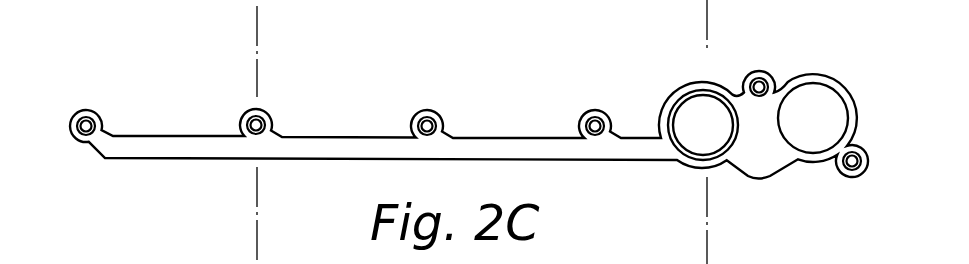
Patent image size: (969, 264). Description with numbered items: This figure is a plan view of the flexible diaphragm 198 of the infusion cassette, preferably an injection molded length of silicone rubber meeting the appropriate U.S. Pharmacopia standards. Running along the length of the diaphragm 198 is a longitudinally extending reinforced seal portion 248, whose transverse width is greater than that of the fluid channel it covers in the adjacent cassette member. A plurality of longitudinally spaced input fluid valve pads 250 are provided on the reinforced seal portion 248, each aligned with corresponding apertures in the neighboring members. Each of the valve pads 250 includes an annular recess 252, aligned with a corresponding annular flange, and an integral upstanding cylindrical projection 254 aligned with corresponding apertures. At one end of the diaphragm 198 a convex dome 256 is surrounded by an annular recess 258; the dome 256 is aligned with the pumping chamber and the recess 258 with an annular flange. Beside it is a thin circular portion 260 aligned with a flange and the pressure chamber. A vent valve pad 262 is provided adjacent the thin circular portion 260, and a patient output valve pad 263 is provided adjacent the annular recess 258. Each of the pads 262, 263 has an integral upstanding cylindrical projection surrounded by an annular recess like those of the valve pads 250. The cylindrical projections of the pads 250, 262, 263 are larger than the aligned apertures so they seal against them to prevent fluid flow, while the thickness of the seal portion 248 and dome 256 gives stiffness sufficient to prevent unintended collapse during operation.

The diaphragm 198 is at (469, 121).
The longitudinally extending reinforced seal portion 248 is at (338, 138).
The input fluid valve pads 250 is at (340, 103).
The annular recess 252 is at (268, 123).
The integral upstanding cylindrical projection 254 is at (242, 124).
The convex dome 256 is at (690, 115).
The annular recess 258 is at (693, 93).
The thin circular portion 260 is at (810, 90).
The vent valve pad 262 is at (838, 171).
The patient output valve pad 263 is at (746, 79).